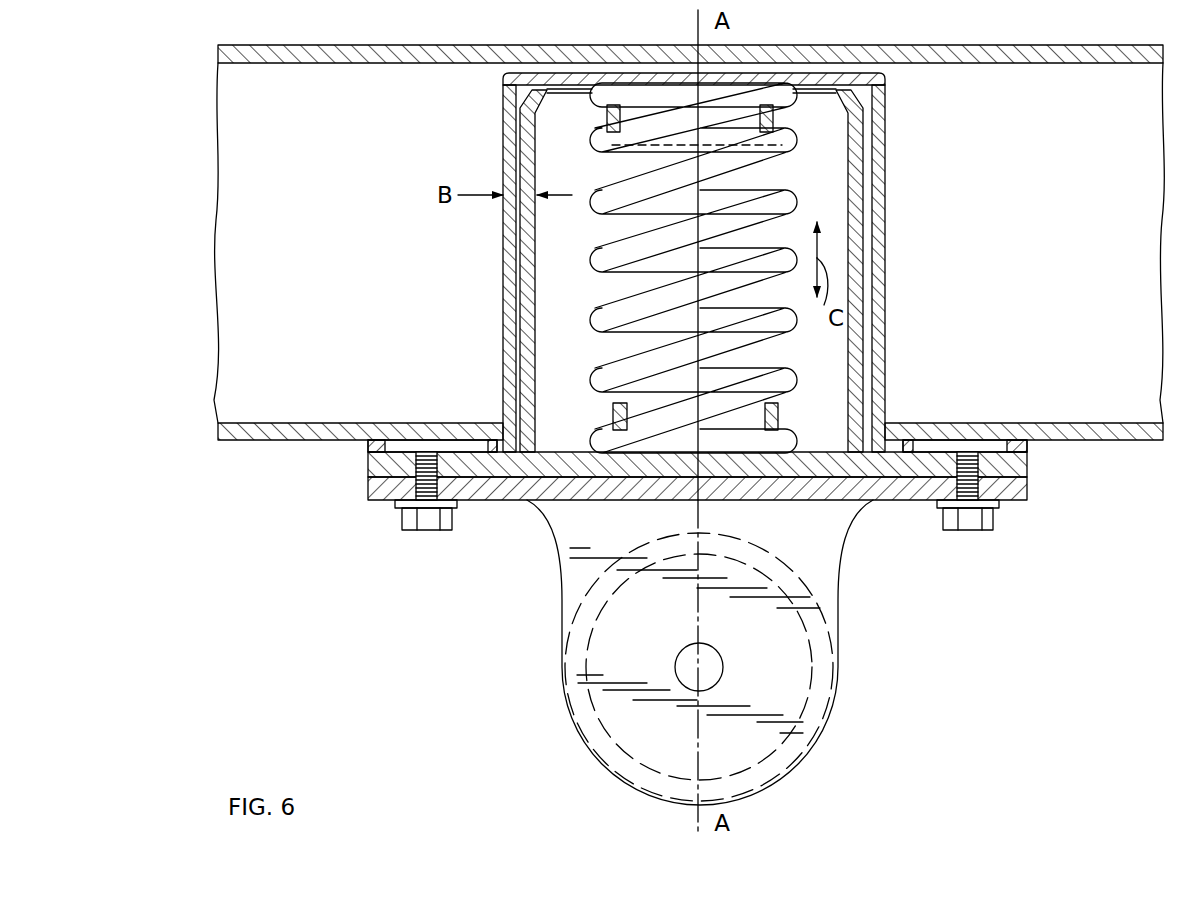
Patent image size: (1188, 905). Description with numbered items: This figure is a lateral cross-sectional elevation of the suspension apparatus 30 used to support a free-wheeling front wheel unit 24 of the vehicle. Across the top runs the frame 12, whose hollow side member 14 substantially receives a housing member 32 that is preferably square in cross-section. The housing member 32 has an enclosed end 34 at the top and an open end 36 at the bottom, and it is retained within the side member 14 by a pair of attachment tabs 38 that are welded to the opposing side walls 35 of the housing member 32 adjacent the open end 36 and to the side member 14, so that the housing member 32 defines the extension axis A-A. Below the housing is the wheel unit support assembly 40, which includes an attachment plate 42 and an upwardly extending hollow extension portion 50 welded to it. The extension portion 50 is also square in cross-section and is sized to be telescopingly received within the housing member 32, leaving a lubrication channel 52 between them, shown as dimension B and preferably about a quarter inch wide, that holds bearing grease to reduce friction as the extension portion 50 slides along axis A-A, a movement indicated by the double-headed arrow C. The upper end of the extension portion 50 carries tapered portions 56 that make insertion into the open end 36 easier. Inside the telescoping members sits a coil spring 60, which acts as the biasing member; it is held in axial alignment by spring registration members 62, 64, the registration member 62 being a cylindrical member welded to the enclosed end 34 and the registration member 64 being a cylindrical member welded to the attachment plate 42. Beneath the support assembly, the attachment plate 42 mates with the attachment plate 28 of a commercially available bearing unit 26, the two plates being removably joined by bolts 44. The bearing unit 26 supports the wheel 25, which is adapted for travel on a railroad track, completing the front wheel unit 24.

The frame 12 is at (932, 44).
The hollow side member 14 is at (689, 251).
The front wheel unit 24 is at (850, 640).
The wheel 25 is at (803, 748).
The bearing unit 26 is at (820, 557).
The attachment plate 28 is at (1020, 500).
The suspension apparatus 30 is at (890, 306).
The housing member 32 is at (886, 145).
The enclosed end 34 is at (538, 73).
The side wall 35 is at (508, 387).
The open end 36 is at (505, 455).
The attachment tab 38 is at (368, 448).
The wheel unit support assembly 40 is at (886, 270).
The attachment plate 42 is at (1027, 465).
The bolt 44 is at (427, 526).
The hollow extension portion 50 is at (886, 218).
The lubrication channel 52 is at (522, 268).
The tapered portion 56 is at (503, 104).
The coil spring 60 is at (590, 318).
The spring registration member 62 is at (600, 267).
The spring registration member 64 is at (884, 382).